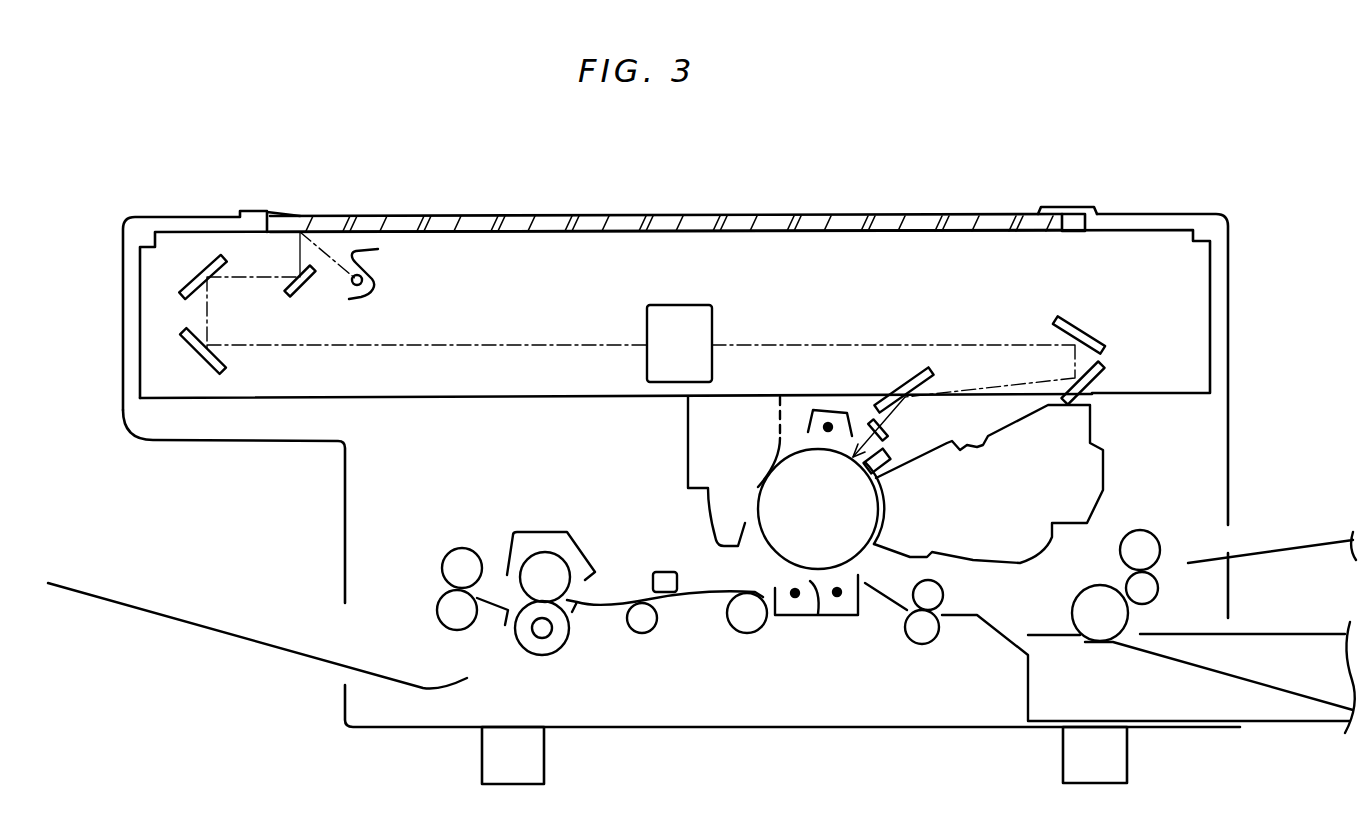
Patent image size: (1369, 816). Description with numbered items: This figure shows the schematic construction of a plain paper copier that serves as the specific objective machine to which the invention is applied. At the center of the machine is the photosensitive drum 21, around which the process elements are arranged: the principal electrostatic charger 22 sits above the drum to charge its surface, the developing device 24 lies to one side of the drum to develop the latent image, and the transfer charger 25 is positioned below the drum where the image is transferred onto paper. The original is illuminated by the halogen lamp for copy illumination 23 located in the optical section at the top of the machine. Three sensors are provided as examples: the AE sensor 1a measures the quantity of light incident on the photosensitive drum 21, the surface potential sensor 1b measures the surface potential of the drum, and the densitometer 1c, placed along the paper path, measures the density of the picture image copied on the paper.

The halogen lamp for copy illumination 23 is at (362, 283).
The photosensitive drum 21 is at (758, 483).
The principal electrostatic charger 22 is at (817, 408).
The AE sensor 1a is at (867, 424).
The surface potential sensor 1b is at (892, 453).
The densitometer 1c is at (656, 572).
The developing device 24 is at (1020, 557).
The transfer charger 25 is at (835, 598).